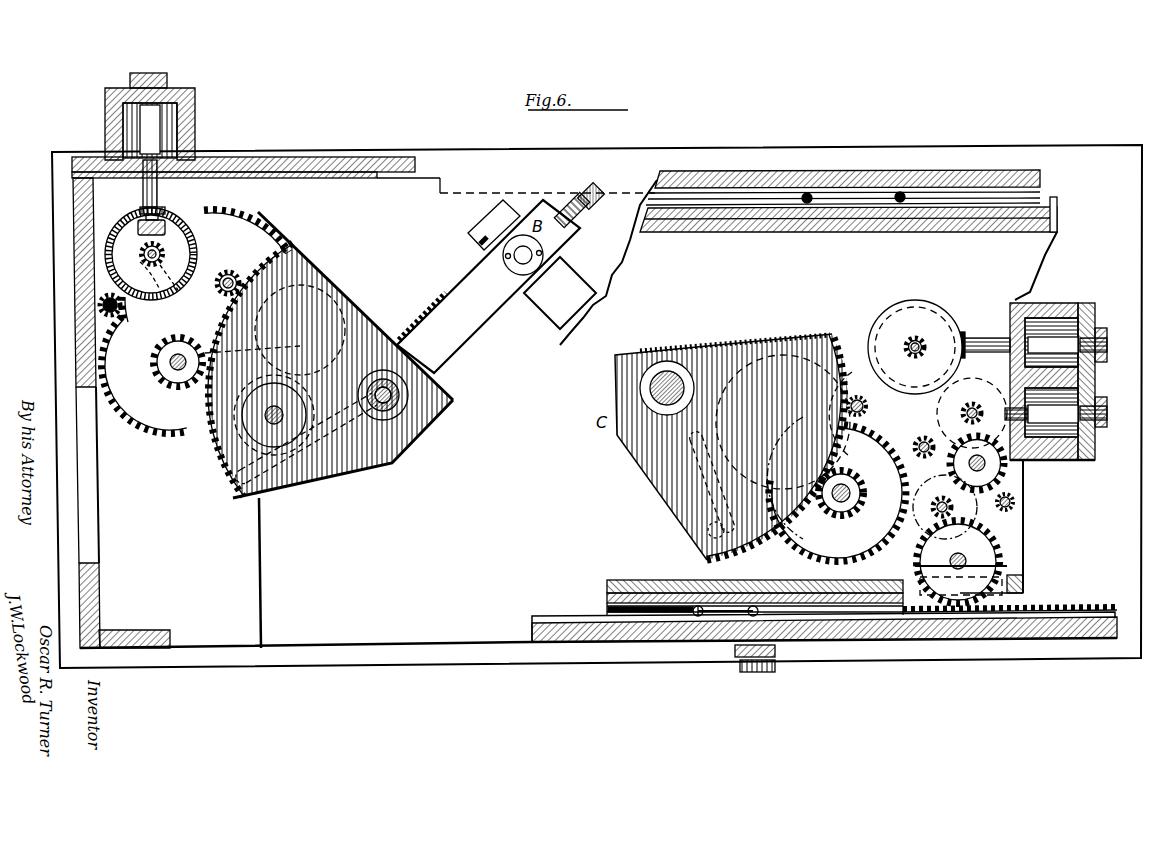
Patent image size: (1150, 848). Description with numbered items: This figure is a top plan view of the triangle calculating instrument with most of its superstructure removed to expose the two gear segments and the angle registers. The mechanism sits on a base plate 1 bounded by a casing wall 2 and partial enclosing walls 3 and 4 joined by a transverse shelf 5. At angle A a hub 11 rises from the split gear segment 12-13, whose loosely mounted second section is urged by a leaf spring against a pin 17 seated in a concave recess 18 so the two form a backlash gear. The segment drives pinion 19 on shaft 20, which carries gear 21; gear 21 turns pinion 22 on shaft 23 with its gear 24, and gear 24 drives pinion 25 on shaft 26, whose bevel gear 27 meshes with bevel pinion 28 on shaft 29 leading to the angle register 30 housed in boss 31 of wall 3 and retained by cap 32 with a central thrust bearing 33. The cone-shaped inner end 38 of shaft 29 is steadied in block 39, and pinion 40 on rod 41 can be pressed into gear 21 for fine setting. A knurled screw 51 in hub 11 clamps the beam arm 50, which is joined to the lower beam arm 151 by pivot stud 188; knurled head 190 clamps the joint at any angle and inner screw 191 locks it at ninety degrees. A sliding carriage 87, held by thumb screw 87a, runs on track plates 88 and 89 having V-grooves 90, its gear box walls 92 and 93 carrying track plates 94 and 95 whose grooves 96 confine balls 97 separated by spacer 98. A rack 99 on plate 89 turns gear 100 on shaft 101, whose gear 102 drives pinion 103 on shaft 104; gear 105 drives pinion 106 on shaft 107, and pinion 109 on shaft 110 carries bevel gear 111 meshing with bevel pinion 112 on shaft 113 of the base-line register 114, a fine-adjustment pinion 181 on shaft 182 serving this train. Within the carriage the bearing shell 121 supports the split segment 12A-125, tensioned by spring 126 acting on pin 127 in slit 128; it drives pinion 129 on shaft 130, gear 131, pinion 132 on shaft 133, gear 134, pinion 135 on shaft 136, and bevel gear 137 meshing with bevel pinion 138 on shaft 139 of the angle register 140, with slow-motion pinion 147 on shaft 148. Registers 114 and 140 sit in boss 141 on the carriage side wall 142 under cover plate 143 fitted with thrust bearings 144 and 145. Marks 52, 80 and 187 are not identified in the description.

The base member or plate 1 is at (852, 152).
The wall or casing 2 is at (92, 498).
The partial enclosing wall 3 is at (290, 162).
The partial enclosing wall 4 is at (157, 630).
The shelf or plate 5 is at (243, 548).
The hub 11 is at (393, 400).
The split gear segment or quadrant 12-13 is at (353, 313).
The pin 17 is at (268, 465).
The concave recess 18 is at (343, 470).
The pinion 19 is at (178, 380).
The shaft 20 is at (176, 364).
The gear 21 is at (168, 427).
The pinion 22 is at (224, 277).
The shaft 23 is at (233, 280).
The gear 24 is at (250, 230).
The pinion 25 is at (162, 257).
The shaft 26 is at (157, 253).
The bevel gear 27 is at (130, 208).
The bevel pinion 28 is at (165, 212).
The shaft 29 is at (157, 198).
The registering or counting device 30 is at (170, 123).
The boss 31 is at (173, 133).
The cap 32 is at (183, 90).
The central thrust bearing 33 is at (152, 100).
The inner end of bevel pinion shaft 38 is at (117, 223).
The block 39 is at (140, 228).
The pinion 40 is at (93, 287).
The shaft or rod 41 is at (103, 308).
The beam arm 50 is at (453, 350).
The knurled headed screw 51 is at (388, 410).
The rack 52 is at (440, 298).
The screw 80 is at (568, 253).
The carriage 87 is at (607, 270).
The thumb screw 87a is at (753, 670).
The carriage track plate 88 is at (984, 172).
The carriage track plate 89 is at (870, 642).
The V-grooves 90 is at (548, 617).
The gear box wall 92 is at (747, 231).
The gear box wall 93 is at (623, 580).
The ball-race track plate 94 is at (1037, 210).
The ball-race track plate 95 is at (607, 598).
The V-track grooves 96 is at (607, 608).
The balls 97 is at (908, 194).
The ball spacer or spreader 98 is at (735, 616).
The rack 99 is at (1080, 607).
The gear 100 is at (1003, 572).
The shaft 101 is at (961, 586).
The gear 102 is at (963, 561).
The pinion 103 is at (927, 513).
The shaft 104 is at (945, 504).
The gear 105 is at (967, 527).
The pinion 106 is at (983, 463).
The shaft 107 is at (982, 468).
The pinion 109 is at (968, 409).
The shaft 110 is at (976, 411).
The bevel gear 111 is at (985, 405).
The bevel pinion 112 is at (1005, 372).
The shaft 113 is at (1030, 460).
The registering or counting mechanism 114 is at (1090, 432).
The outer annular shell of ball bearing pivot 121 is at (672, 385).
The split gear segment or quadrant 12A-125 is at (793, 333).
The spring 126 is at (680, 507).
The pin 127 is at (702, 530).
The radial cavity or slit 128 is at (690, 480).
The pinion 129 is at (853, 503).
The shaft 130 is at (840, 503).
The gear 131 is at (810, 548).
The pinion 132 is at (866, 407).
The shaft 133 is at (862, 395).
The gear 134 is at (852, 338).
The pinion 135 is at (922, 342).
The shaft 136 is at (913, 343).
The bevel gear 137 is at (952, 317).
The bevel pinion 138 is at (962, 333).
The shaft 139 is at (965, 345).
The registering or counting device 140 is at (1067, 290).
The boss 141 is at (1075, 460).
The side wall of carriage 142 is at (1058, 252).
The cover plate 143 is at (1090, 303).
The thrust bearing 144 is at (1102, 398).
The thrust bearing 145 is at (1110, 338).
The pinion 147 is at (922, 441).
The shaft 148 is at (912, 470).
The beam arm 151 is at (560, 293).
The pinion 181 is at (1012, 508).
The shaft 182 is at (1013, 503).
The bracket 187 is at (467, 237).
The pivot stud 188 is at (520, 260).
The knurled head 190 is at (590, 218).
The knurled headed screw 191 is at (596, 200).